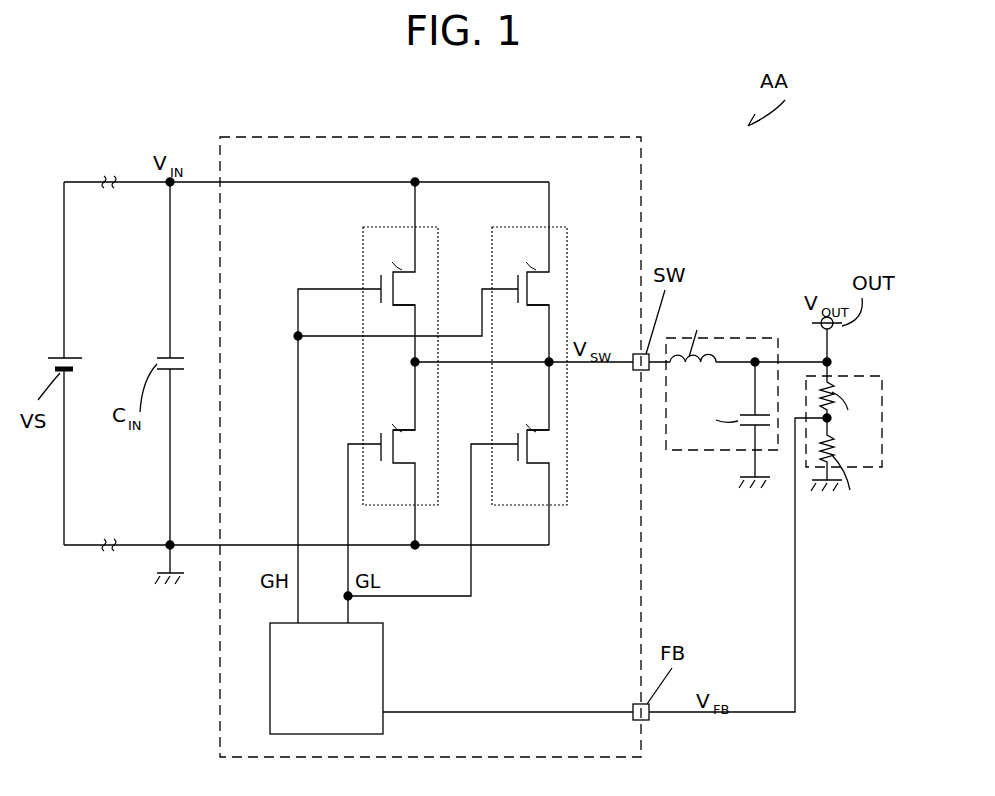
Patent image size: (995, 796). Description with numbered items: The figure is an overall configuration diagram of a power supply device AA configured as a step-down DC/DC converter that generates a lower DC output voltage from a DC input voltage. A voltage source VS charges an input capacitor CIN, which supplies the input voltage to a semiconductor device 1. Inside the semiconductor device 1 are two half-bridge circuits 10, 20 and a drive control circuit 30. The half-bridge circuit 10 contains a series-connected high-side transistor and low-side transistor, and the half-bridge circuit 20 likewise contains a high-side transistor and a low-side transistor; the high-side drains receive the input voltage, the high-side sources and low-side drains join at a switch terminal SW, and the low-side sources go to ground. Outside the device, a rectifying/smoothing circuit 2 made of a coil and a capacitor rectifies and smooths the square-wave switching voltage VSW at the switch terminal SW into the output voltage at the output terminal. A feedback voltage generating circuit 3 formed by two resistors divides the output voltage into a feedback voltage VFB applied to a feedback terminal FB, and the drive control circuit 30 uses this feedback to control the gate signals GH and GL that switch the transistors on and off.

The semiconductor device 1 is at (518, 137).
The rectifying/smoothing circuit 2 is at (740, 338).
The feedback voltage generating circuit 3 is at (860, 376).
The half-bridge circuit 10 is at (435, 227).
The half-bridge circuit 20 is at (562, 227).
The drive control circuit 30 is at (383, 643).